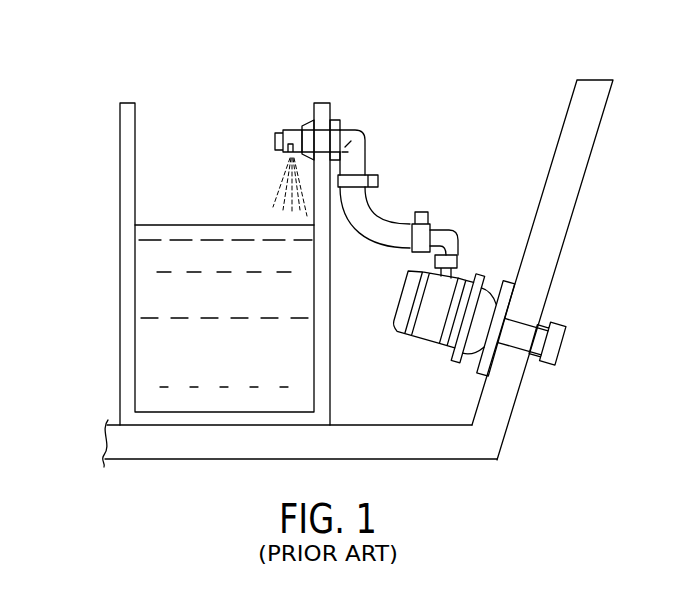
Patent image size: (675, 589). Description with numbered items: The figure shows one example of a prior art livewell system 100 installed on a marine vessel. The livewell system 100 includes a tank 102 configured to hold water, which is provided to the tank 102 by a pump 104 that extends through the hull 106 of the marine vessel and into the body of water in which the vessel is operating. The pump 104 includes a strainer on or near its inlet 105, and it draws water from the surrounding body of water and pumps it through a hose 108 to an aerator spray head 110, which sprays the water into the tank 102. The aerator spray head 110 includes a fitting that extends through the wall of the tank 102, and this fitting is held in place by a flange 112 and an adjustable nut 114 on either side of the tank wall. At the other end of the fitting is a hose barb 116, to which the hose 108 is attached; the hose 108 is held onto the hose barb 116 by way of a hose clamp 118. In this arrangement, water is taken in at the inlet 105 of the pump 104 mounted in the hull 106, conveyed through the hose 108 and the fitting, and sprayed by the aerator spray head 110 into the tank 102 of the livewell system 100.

The livewell system 100 is at (454, 107).
The tank 102 is at (120, 292).
The pump 104 is at (428, 330).
The inlet 105 is at (569, 346).
The hull 106 is at (548, 227).
The hose 108 is at (394, 222).
The aerator spray head 110 is at (273, 129).
The flange 112 is at (335, 120).
The adjustable nut 114 is at (304, 122).
The hose barb 116 is at (352, 152).
The hose clamp 118 is at (370, 176).